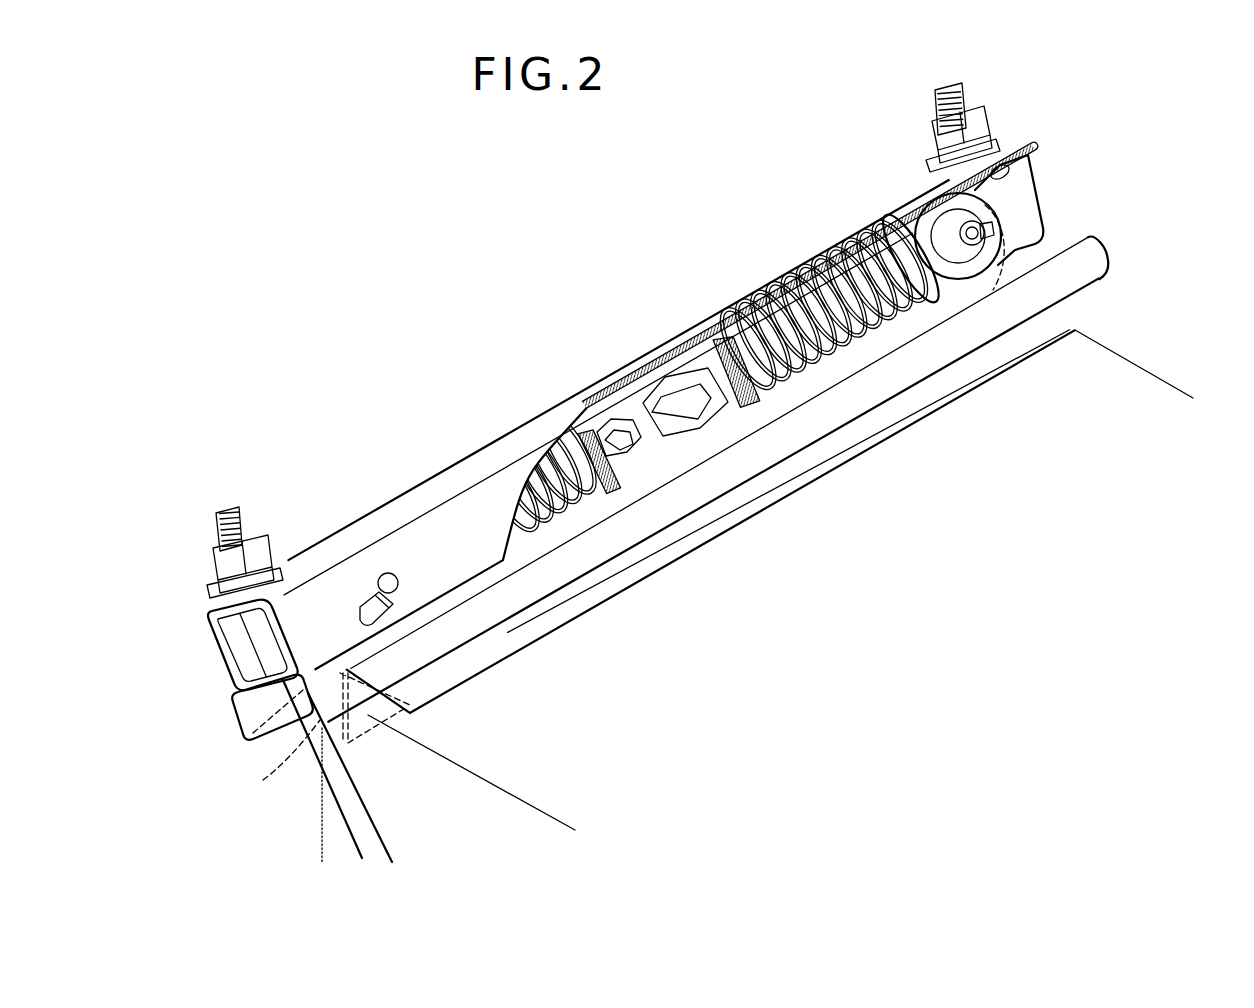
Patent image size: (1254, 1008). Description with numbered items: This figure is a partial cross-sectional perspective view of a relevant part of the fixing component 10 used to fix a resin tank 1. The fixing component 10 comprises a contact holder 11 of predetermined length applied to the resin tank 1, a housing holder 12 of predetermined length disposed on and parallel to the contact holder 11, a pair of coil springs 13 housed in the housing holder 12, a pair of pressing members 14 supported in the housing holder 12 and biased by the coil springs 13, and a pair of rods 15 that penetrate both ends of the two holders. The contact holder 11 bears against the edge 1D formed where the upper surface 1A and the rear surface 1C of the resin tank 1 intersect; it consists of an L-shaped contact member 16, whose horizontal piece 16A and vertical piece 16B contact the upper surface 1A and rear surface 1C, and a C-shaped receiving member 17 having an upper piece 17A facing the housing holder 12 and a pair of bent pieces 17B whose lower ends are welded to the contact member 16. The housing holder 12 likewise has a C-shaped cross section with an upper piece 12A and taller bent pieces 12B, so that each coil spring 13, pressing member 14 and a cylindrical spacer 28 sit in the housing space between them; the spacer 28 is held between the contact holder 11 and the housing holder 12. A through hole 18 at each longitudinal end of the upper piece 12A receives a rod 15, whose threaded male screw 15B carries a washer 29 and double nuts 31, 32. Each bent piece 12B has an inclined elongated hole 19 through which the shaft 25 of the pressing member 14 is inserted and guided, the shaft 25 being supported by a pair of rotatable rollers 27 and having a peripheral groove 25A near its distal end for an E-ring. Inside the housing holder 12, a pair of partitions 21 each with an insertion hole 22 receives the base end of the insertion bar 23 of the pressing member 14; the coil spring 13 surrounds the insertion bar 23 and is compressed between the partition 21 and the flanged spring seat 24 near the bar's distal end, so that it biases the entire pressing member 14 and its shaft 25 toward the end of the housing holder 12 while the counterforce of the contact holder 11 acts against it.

The resin tank 1 is at (1163, 367).
The upper surface 1A is at (530, 790).
The rear surface 1C is at (322, 838).
The edge 1D is at (270, 735).
The fixing component 10 is at (583, 268).
The contact holder 11 is at (1181, 226).
The housing holder 12 is at (785, 282).
The upper piece 12A is at (448, 482).
The bent piece 12B is at (272, 638).
The coil spring 13 is at (740, 335).
The pressing member 14 is at (668, 383).
The rod 15 is at (345, 810).
The male screw 15B is at (938, 115).
The contact member 16 is at (1062, 327).
The horizontal piece 16A is at (422, 697).
The vertical piece 16B is at (300, 748).
The receiving member 17 is at (1093, 253).
The upper piece 17A is at (557, 532).
The bent piece 17B is at (234, 716).
The through hole 18 is at (1017, 165).
The elongated hole 19 is at (1000, 286).
The partition 21 is at (735, 402).
The insertion hole 22 is at (713, 397).
The insertion bar 23 is at (677, 417).
The spring seat 24 is at (920, 310).
The shaft 25 is at (990, 230).
The peripheral groove 25A is at (955, 237).
The roller 27 is at (977, 262).
The spacer 28 is at (1010, 190).
The washer 29 is at (1003, 152).
The nut 31 is at (993, 138).
The nut 32 is at (967, 127).